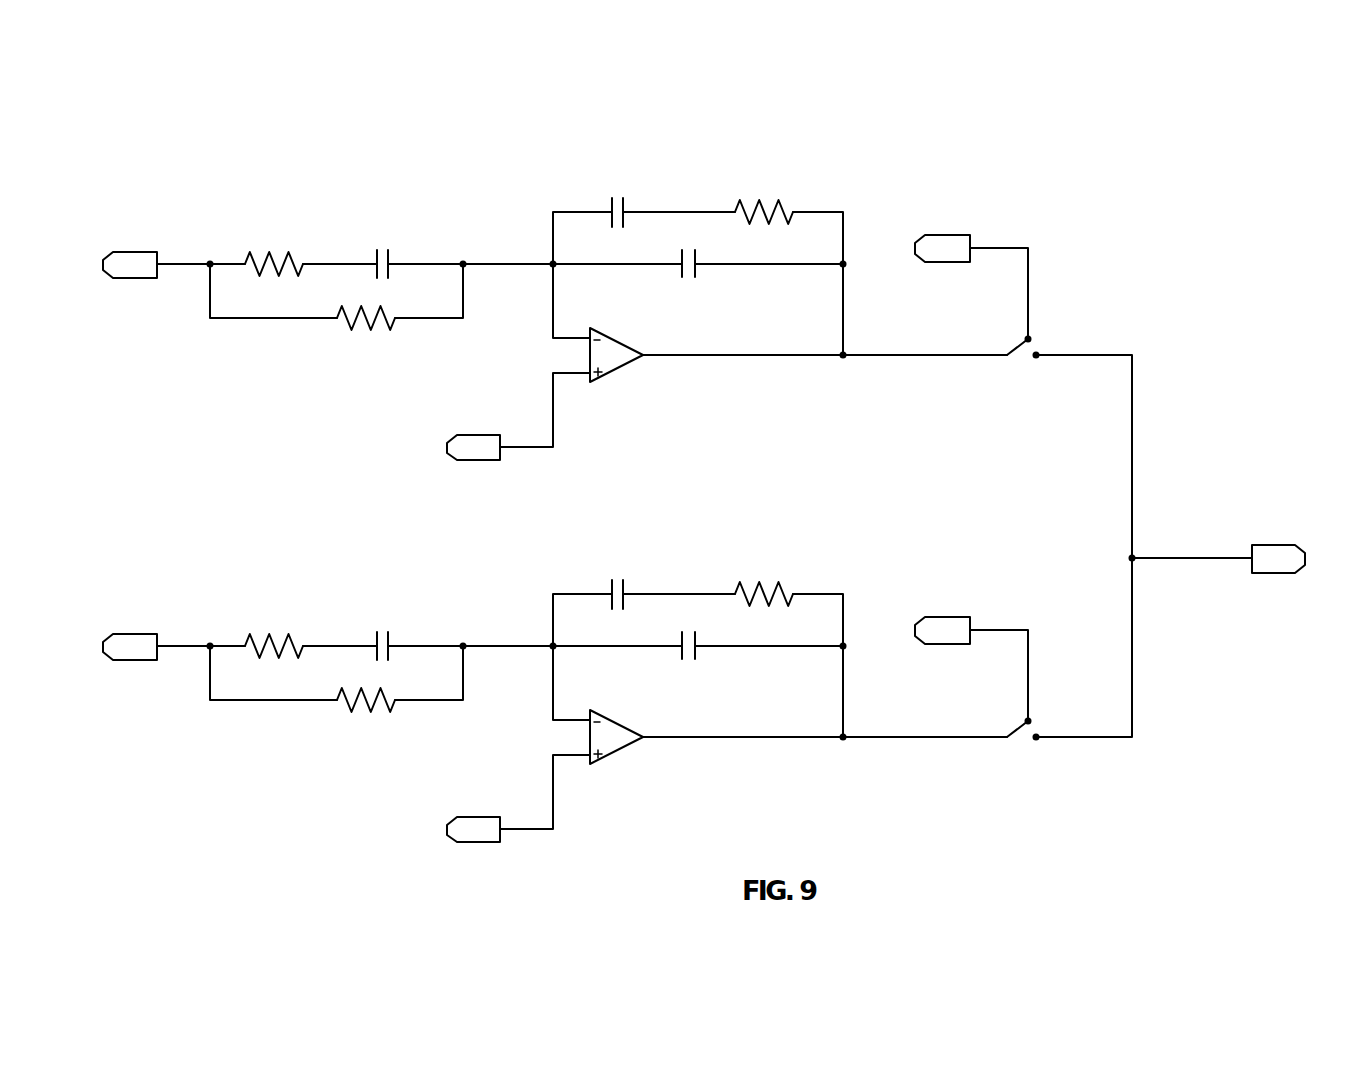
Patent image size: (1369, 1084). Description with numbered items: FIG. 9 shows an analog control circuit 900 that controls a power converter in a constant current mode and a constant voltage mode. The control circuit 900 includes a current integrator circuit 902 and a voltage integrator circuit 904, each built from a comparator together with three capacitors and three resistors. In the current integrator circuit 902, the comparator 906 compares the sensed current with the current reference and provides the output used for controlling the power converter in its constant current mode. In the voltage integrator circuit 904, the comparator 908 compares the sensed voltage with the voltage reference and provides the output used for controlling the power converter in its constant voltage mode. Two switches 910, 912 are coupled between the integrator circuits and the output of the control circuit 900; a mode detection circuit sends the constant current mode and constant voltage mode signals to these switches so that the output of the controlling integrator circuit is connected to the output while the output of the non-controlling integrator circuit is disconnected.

The analog control circuit 900 is at (195, 125).
The current integrator circuit 902 is at (564, 195).
The voltage integrator circuit 904 is at (502, 537).
The comparator 906 is at (614, 367).
The comparator 908 is at (614, 749).
The switch 910 is at (1022, 358).
The switch 912 is at (1022, 740).